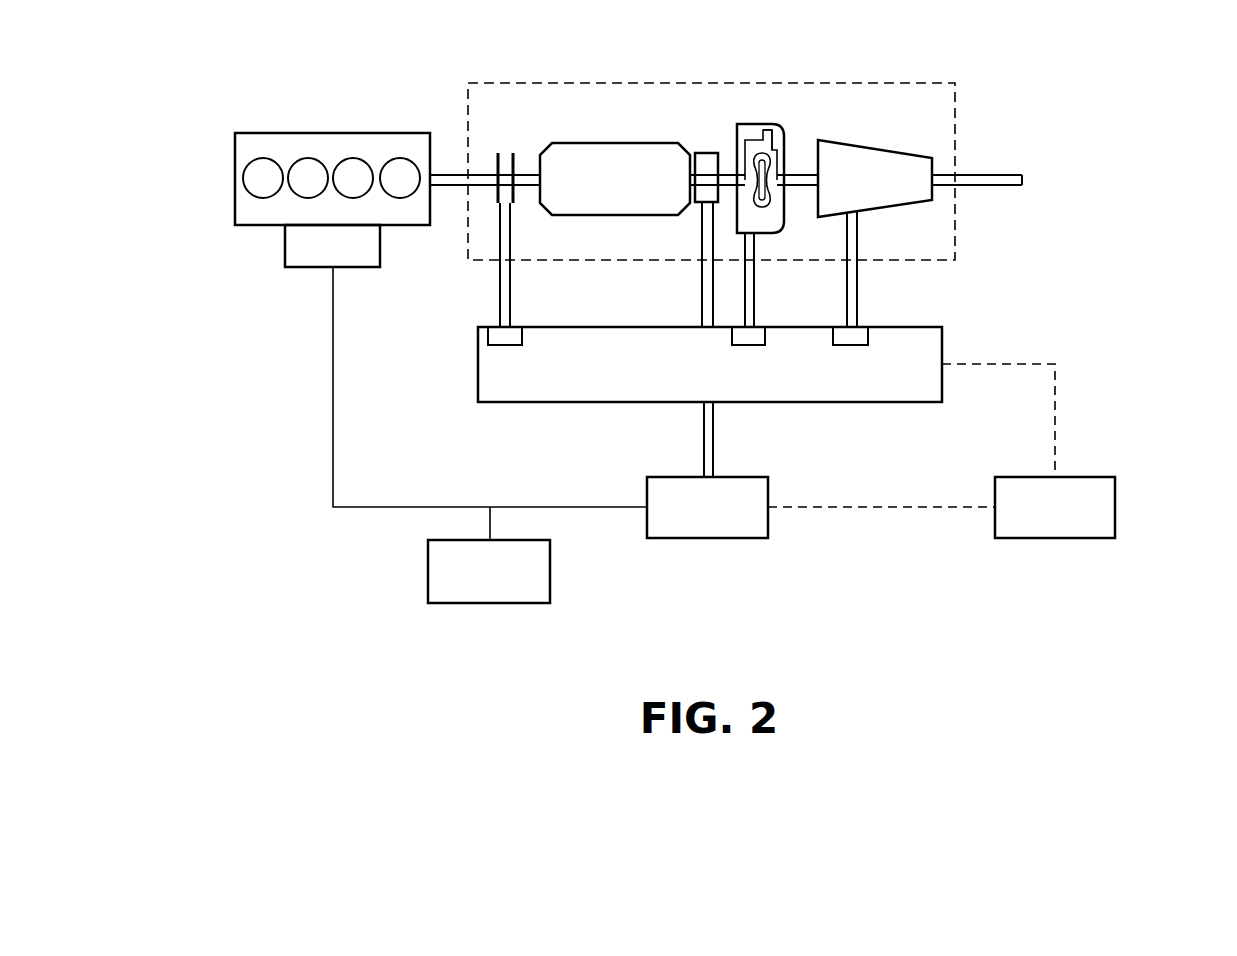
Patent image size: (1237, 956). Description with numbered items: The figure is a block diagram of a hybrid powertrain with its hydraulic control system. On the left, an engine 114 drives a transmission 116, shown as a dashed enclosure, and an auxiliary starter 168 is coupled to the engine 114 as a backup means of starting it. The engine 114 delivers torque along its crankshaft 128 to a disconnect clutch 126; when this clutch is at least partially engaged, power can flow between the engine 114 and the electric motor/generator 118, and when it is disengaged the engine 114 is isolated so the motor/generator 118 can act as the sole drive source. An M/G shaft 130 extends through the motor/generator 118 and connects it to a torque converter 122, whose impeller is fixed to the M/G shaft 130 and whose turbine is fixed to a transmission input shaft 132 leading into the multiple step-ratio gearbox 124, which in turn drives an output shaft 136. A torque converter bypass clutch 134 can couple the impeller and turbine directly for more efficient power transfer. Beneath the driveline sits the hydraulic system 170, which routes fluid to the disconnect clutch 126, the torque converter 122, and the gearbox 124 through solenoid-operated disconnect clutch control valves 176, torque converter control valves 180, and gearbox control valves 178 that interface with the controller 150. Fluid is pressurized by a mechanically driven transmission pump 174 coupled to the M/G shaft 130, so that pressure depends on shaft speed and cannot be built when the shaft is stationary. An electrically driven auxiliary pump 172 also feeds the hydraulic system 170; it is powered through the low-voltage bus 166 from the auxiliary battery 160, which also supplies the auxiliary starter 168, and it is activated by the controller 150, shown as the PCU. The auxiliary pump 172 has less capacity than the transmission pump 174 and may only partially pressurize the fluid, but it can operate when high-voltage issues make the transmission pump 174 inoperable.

The engine 114 is at (287, 133).
The transmission 116 is at (725, 83).
The electric motor/generator (M/G) 118 is at (618, 143).
The torque converter 122 is at (758, 236).
The gearbox 124 is at (875, 214).
The disconnect clutch 126 is at (505, 188).
The crankshaft 128 is at (465, 173).
The M/G shaft 130 is at (523, 172).
The transmission input shaft 132 is at (796, 173).
The torque converter bypass clutch 134 is at (777, 124).
The transmission output shaft 136 is at (990, 173).
The controller (PCU) 150 is at (1115, 505).
The auxiliary battery 160 is at (428, 572).
The low-voltage bus 166 is at (333, 386).
The auxiliary starter 168 is at (284, 247).
The hydraulic system 170 is at (478, 364).
The auxiliary pump 172 is at (707, 540).
The transmission pump 174 is at (701, 207).
The disconnect clutch control valve 176 is at (522, 335).
The gearbox control valve 178 is at (868, 337).
The torque converter control valve 180 is at (732, 338).